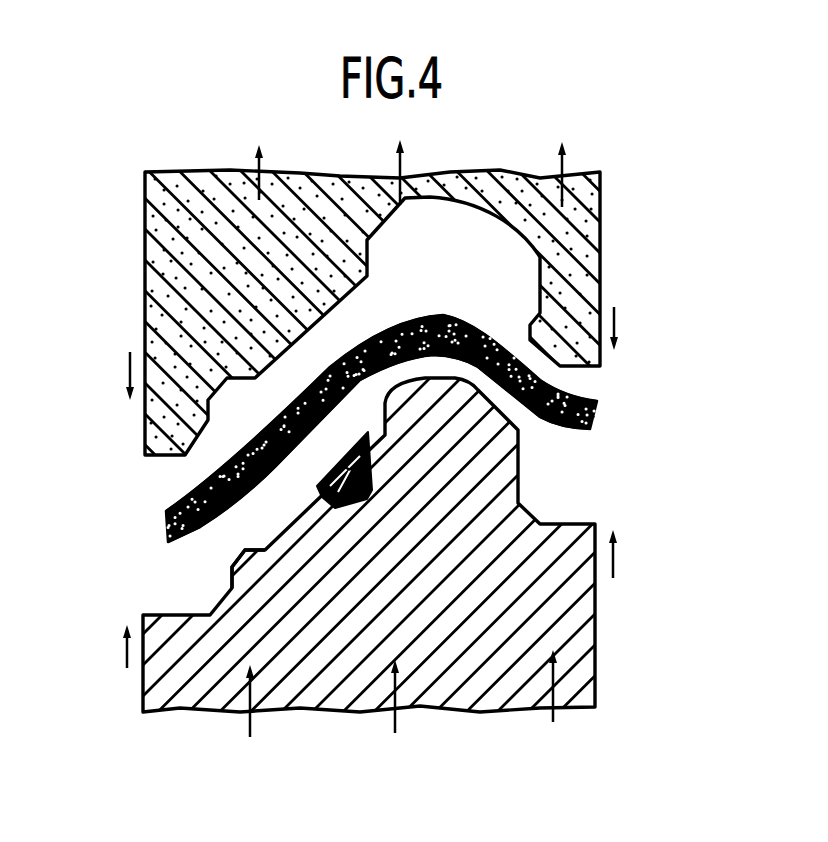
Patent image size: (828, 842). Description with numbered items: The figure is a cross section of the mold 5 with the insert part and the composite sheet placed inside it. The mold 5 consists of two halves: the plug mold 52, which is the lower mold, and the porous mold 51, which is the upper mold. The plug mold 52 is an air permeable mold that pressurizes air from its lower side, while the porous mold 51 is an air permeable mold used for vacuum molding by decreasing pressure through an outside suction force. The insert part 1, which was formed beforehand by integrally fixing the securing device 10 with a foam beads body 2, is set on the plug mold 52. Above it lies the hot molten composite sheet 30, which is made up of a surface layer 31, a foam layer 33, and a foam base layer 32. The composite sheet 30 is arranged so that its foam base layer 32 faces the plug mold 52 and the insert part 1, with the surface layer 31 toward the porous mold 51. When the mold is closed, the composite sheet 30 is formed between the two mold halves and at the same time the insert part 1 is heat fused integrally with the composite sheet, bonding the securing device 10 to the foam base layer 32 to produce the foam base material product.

The insert part 1 is at (378, 450).
The foam beads body 2 is at (345, 467).
The mold 5 is at (630, 207).
The securing device 10 is at (370, 503).
The composite sheet 30 is at (399, 451).
The surface layer 31 is at (575, 392).
The foam base layer 32 is at (590, 432).
The foam layer 33 is at (600, 416).
The porous mold 51 is at (578, 256).
The plug mold 52 is at (575, 637).